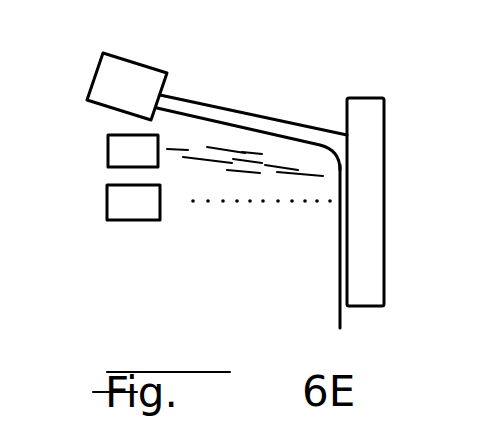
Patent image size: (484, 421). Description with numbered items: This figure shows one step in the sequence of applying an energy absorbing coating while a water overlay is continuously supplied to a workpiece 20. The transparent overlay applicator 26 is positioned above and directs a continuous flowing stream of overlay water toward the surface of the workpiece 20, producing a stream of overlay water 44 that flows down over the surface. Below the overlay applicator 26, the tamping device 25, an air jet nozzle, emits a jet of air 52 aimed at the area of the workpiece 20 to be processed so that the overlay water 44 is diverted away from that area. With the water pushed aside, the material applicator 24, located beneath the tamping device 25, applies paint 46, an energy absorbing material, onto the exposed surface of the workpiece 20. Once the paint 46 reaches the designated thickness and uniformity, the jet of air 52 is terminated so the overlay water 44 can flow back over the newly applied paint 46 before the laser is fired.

The workpiece 20 is at (375, 247).
The material applicator 24 is at (108, 200).
The tamping device 25 is at (110, 153).
The transparent overlay applicator 26 is at (137, 70).
The stream of overlay water 44 is at (340, 270).
The paint 46 is at (250, 205).
The jet of air 52 is at (253, 160).